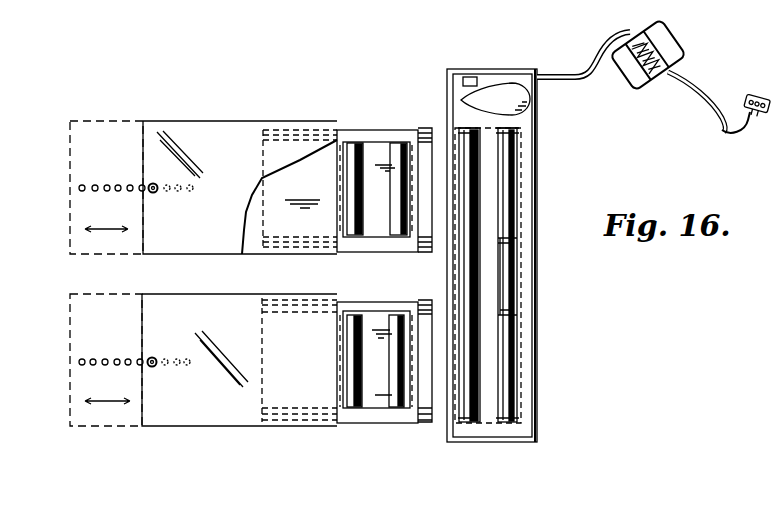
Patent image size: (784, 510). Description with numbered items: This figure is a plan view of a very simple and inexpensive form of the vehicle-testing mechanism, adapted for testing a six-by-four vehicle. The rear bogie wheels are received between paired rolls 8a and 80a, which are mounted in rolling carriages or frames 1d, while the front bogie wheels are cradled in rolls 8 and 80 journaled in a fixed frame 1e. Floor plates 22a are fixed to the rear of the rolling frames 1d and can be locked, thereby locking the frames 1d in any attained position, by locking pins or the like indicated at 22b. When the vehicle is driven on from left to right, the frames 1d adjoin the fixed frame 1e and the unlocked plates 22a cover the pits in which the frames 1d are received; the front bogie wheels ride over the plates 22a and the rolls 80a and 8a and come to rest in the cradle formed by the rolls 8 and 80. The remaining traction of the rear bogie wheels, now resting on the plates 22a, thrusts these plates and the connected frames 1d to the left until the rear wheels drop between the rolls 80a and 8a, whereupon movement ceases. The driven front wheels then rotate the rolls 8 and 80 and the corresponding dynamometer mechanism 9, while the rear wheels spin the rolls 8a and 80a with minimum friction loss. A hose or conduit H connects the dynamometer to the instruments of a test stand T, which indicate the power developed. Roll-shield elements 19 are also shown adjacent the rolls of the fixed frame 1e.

The floor plate 22a is at (245, 124).
The locking pin 22b is at (118, 185).
The rolling frame 1d is at (408, 132).
The roll 80a is at (348, 143).
The roll 8a is at (394, 143).
The fixed frame 1e is at (528, 192).
The dynamometer mechanism 9 is at (503, 92).
The roll 80 is at (467, 274).
The roll 8 is at (507, 268).
The strip segment 19 is at (507, 217).
The hose or conduit H is at (592, 50).
The test stand T is at (676, 38).